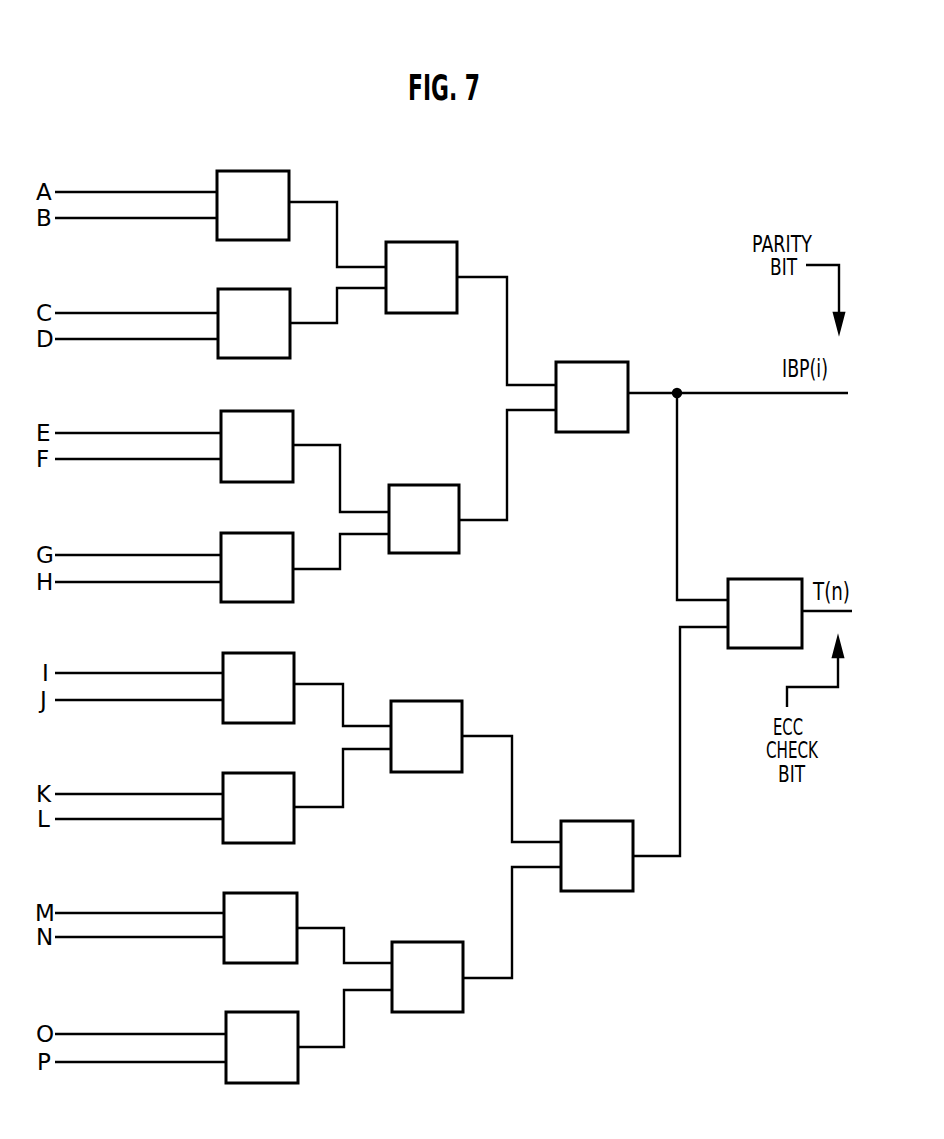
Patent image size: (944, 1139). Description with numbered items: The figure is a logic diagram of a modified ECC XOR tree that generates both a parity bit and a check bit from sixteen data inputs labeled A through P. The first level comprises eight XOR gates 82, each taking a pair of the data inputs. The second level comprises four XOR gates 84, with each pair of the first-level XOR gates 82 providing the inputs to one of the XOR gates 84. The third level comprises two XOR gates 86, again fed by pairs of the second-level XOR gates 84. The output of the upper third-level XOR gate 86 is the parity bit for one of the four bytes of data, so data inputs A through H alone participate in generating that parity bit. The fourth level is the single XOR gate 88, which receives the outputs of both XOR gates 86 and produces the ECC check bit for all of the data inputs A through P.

The first level XOR gates 82 is at (270, 1012).
The second level XOR gates 84 is at (431, 942).
The third level XOR gates 86 is at (606, 821).
The fourth level XOR gate 88 is at (757, 579).